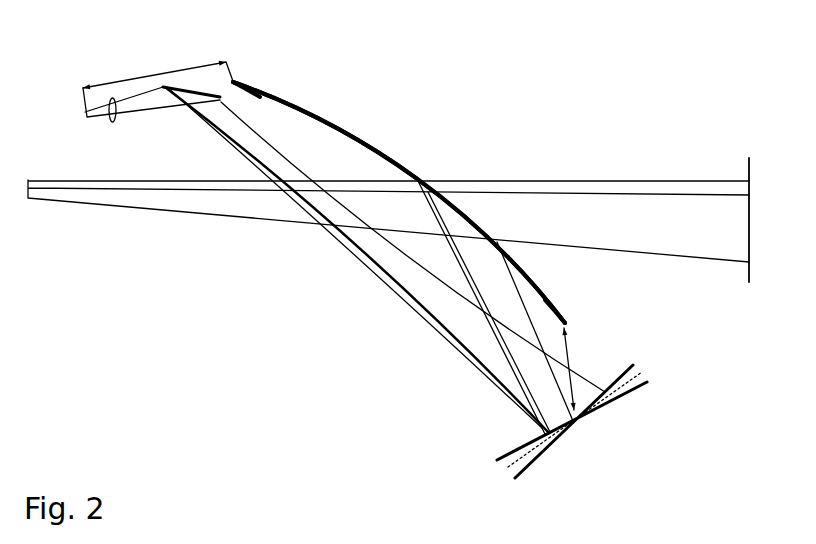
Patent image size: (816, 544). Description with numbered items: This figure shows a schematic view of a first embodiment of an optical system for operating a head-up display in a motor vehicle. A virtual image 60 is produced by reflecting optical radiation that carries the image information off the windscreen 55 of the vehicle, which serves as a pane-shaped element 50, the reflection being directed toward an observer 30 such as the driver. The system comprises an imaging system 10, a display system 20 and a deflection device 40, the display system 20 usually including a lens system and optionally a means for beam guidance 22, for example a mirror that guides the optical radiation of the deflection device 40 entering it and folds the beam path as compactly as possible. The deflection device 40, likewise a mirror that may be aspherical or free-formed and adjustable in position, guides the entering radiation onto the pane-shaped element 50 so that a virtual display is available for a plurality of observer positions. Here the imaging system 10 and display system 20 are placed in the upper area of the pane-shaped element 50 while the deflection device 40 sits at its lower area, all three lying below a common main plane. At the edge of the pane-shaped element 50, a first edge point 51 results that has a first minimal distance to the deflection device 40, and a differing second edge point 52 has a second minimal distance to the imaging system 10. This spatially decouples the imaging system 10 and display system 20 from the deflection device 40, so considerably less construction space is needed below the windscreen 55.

The imaging system 10 is at (85, 113).
The display system 20 is at (108, 121).
The means for beam guidance 22 is at (186, 96).
The observer 30 is at (30, 200).
The deflection device 40 is at (630, 391).
The pane-shaped element 50 is at (403, 235).
The first edge point 51 is at (566, 323).
The second edge point 52 is at (233, 83).
The windscreen 55 is at (333, 120).
The virtual image 60 is at (748, 170).